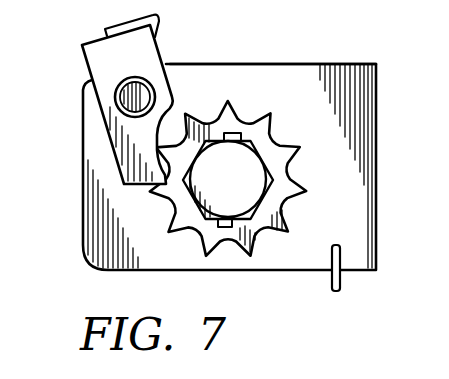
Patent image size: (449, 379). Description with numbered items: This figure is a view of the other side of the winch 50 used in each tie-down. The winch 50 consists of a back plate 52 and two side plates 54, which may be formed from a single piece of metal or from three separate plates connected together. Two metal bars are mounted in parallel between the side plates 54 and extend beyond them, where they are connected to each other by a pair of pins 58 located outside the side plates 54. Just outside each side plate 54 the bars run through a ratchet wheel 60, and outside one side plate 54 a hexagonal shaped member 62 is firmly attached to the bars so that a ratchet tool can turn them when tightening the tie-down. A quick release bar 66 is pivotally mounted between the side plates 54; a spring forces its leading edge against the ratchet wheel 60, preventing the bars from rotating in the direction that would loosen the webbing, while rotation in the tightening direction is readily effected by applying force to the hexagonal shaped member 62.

The winch 50 is at (252, 41).
The back plate 52 is at (378, 113).
The side plate 54 is at (278, 63).
The pin 58 is at (238, 112).
The ratchet wheel 60 is at (285, 140).
The hexagonal shaped member 62 is at (247, 180).
The quick release bar 66 is at (97, 40).